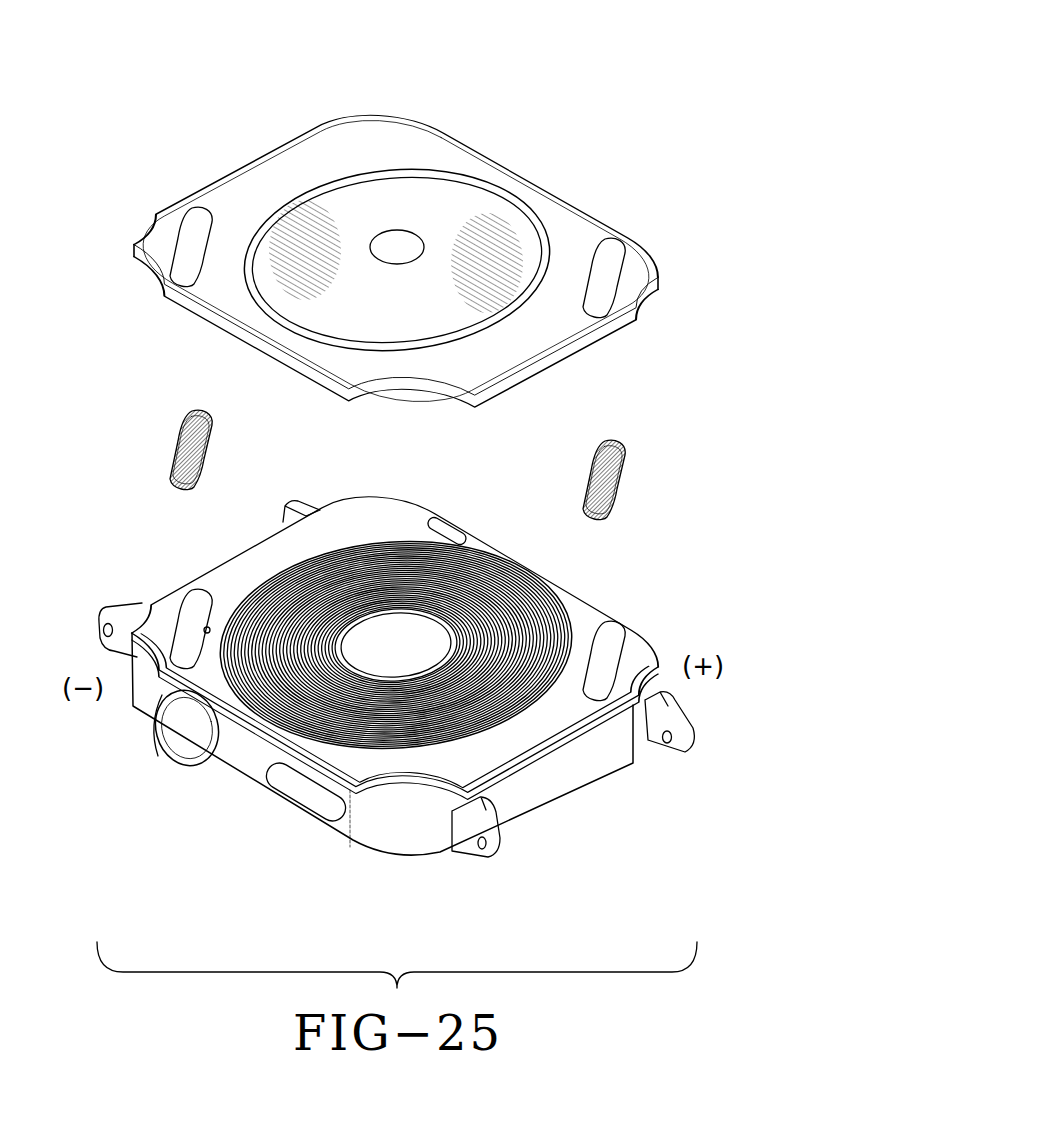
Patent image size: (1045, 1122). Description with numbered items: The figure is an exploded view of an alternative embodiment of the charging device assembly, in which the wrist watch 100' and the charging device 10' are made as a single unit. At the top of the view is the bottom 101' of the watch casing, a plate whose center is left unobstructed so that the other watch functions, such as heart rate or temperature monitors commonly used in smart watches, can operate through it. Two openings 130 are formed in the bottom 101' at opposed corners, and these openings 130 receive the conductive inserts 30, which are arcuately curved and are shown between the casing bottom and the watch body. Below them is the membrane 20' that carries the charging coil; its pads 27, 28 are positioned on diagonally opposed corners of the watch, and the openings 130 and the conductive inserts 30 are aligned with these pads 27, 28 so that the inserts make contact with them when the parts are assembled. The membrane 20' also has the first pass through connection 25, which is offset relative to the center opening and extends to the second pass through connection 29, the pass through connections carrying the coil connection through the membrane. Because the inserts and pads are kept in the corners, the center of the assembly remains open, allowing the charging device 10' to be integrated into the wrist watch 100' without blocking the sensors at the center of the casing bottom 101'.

The wrist watch 100' is at (786, 88).
The bottom of the watch casing 101' is at (396, 234).
The openings 130 is at (193, 232).
The conductive inserts 30 is at (173, 437).
The membrane 20' is at (402, 653).
The charging device 10' is at (400, 679).
The first pass through connection 25 is at (328, 640).
The pad 27 is at (607, 637).
The pad 28 is at (180, 637).
The second pass through connection 29 is at (203, 628).